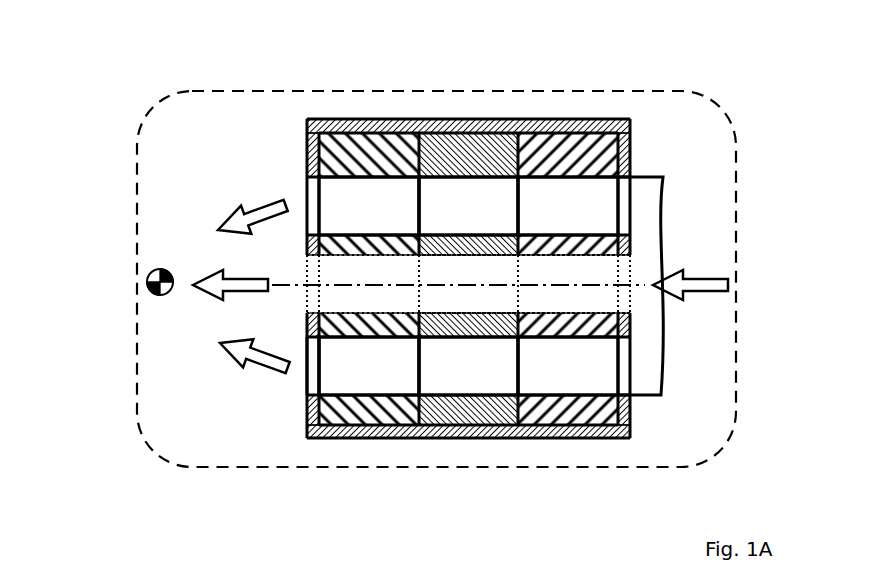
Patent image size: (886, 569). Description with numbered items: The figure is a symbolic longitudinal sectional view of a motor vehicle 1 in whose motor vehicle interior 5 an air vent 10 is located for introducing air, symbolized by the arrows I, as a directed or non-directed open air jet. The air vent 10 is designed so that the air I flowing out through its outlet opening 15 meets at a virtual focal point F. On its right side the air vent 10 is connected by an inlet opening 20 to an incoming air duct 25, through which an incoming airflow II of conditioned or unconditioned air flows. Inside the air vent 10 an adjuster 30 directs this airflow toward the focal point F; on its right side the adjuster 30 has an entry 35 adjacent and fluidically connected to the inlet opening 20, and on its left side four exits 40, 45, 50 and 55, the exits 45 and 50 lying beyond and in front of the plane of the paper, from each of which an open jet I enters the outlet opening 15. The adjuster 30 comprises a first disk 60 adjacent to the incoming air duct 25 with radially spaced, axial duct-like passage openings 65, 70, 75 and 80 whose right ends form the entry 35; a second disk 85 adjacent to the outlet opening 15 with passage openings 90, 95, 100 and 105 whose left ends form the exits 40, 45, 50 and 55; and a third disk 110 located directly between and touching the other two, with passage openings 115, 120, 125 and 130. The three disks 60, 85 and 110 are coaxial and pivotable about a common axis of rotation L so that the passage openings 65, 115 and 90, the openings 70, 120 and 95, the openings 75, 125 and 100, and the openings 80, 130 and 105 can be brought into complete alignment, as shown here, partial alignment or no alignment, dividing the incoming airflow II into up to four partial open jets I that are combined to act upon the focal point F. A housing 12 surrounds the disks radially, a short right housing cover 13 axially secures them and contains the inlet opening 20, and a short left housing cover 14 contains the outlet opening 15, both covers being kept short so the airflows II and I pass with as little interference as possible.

The motor vehicle 1 is at (475, 279).
The motor vehicle interior 5 is at (155, 427).
The air vent 10 is at (380, 200).
The housing 12 is at (562, 125).
The right housing cover 13 is at (633, 410).
The left housing cover 14 is at (307, 408).
The outlet opening 15 is at (316, 198).
The inlet opening 20 is at (668, 208).
The incoming air duct 25 is at (656, 193).
The adjuster 30 is at (448, 152).
The entry 35 is at (635, 177).
The exit 40 is at (305, 200).
The exit 45 is at (223, 299).
The exit 50 is at (307, 298).
The exit 55 is at (318, 378).
The first disk 60 is at (598, 410).
The passage opening 65 is at (603, 213).
The passage opening 70 is at (675, 299).
The passage opening 75 is at (603, 298).
The passage opening 80 is at (600, 367).
The second disk 85 is at (353, 380).
The passage opening 90 is at (395, 168).
The passage opening 95 is at (421, 469).
The passage opening 100 is at (308, 437).
The passage opening 105 is at (355, 297).
The third disk 110 is at (508, 408).
The passage opening 115 is at (488, 188).
The passage opening 120 is at (462, 384).
The passage opening 125 is at (442, 297).
The passage opening 130 is at (478, 372).
The open air jet I is at (218, 225).
The incoming airflow II is at (728, 285).
The virtual focal point F is at (146, 281).
The common axis of rotation L is at (605, 278).